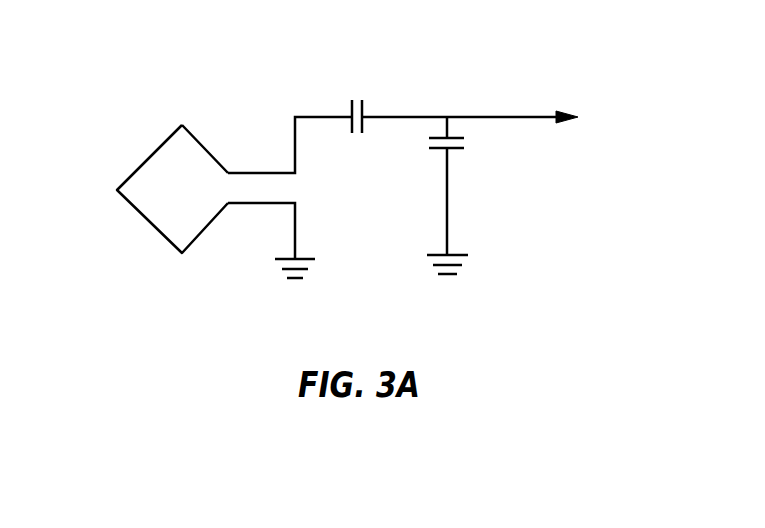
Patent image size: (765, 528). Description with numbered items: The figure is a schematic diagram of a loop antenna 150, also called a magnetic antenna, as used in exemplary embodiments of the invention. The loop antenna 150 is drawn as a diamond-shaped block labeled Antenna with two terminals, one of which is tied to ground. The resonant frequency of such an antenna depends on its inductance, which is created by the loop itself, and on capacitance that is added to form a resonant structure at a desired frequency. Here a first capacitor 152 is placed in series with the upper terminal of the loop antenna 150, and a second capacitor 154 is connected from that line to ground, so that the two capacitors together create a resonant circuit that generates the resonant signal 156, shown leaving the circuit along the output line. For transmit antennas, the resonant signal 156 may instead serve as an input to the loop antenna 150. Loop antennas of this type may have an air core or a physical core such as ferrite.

The loop antenna 150 is at (148, 158).
The capacitor 152 is at (364, 105).
The capacitor 154 is at (455, 152).
The resonant signal 156 is at (482, 116).